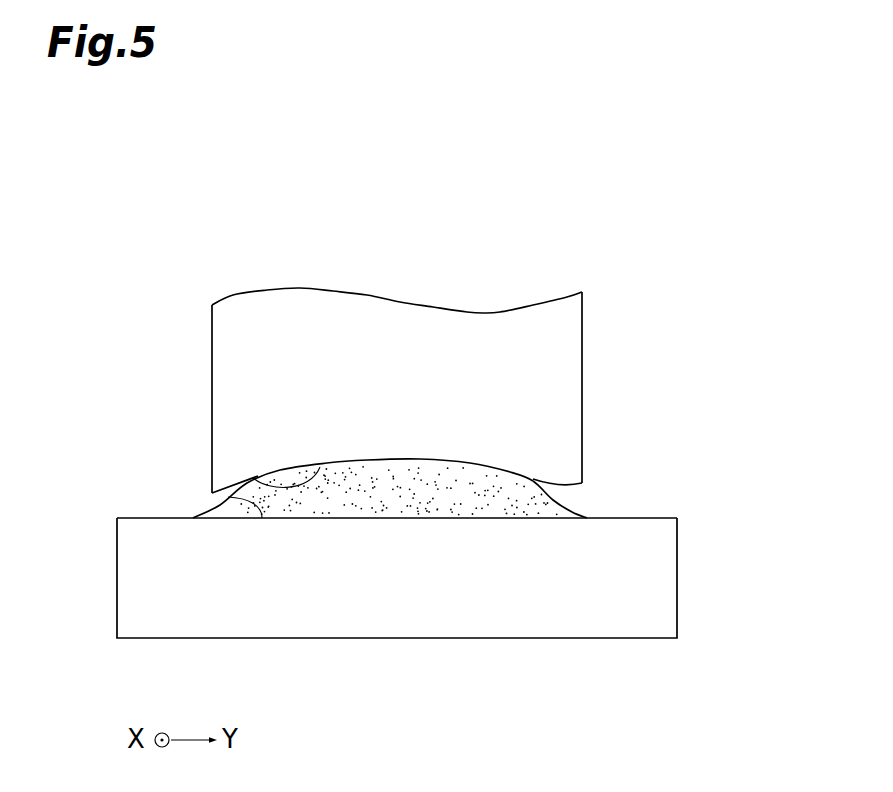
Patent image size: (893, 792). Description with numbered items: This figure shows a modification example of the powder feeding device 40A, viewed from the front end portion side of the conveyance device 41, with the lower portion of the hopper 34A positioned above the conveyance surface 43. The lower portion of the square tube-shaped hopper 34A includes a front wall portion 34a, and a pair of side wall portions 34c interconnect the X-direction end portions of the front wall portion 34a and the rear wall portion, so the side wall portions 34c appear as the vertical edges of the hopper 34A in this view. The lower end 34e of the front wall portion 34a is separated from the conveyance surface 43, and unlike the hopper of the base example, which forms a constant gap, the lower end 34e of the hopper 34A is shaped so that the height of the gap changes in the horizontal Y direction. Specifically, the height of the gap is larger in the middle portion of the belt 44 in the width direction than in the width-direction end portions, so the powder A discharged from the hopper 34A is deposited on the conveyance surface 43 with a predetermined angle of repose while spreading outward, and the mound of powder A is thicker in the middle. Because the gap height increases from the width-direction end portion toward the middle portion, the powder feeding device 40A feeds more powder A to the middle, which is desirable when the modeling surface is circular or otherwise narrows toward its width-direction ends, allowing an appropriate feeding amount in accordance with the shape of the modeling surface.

The powder feeding device 40A is at (613, 257).
The hopper 34A is at (600, 347).
The side wall portions 34c is at (212, 413).
The front wall portion 34a is at (542, 470).
The lower end 34e is at (253, 478).
The conveyance surface 43 is at (228, 497).
The powder A is at (530, 500).
The belt 44 is at (660, 514).
The conveyance device 41 is at (700, 578).